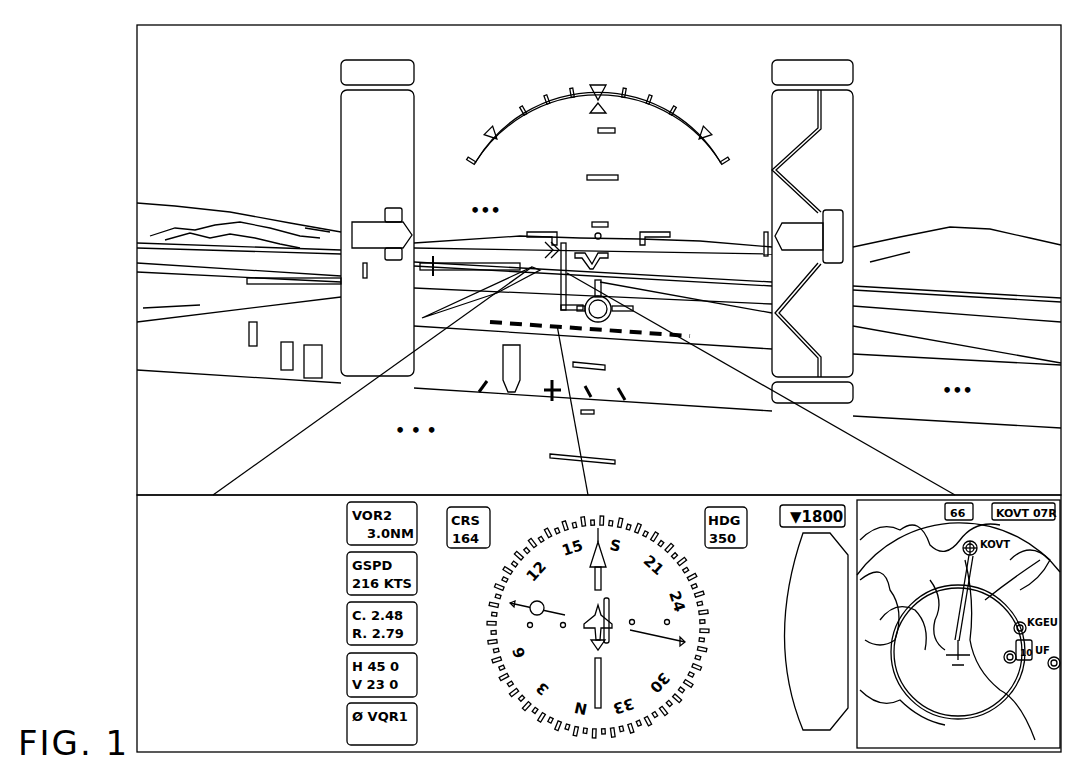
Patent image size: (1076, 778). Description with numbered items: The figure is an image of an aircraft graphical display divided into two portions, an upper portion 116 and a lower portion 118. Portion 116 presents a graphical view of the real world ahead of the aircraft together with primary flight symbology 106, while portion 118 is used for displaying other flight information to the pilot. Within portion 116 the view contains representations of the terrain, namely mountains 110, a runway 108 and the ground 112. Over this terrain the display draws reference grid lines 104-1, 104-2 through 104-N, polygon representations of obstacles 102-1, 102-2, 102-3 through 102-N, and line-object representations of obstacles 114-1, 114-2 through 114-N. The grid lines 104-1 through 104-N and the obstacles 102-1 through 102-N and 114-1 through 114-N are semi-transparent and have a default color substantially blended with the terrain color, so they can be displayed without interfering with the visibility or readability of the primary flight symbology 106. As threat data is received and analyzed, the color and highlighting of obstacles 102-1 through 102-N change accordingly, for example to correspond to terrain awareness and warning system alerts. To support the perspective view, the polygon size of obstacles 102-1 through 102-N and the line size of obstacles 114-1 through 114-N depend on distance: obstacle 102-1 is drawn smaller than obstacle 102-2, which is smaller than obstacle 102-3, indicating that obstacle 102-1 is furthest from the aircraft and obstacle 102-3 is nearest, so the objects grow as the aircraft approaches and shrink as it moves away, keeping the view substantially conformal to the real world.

The obstacle 102-1 is at (252, 348).
The obstacle 102-2 is at (290, 372).
The obstacle 102-3 is at (313, 380).
The obstacle 102-N is at (510, 388).
The reference grid line 104-1 is at (866, 415).
The reference grid line 104-2 is at (920, 354).
The reference grid line 104-N is at (1004, 322).
The primary flight symbology 106 is at (648, 232).
The runway 108 is at (445, 320).
The mountains 110 is at (203, 212).
The ground 112 is at (957, 330).
The obstacle 114-1 is at (363, 275).
The obstacle 114-2 is at (433, 256).
The obstacle 114-N is at (467, 258).
The portion 116 is at (222, 103).
The portion 118 is at (210, 595).